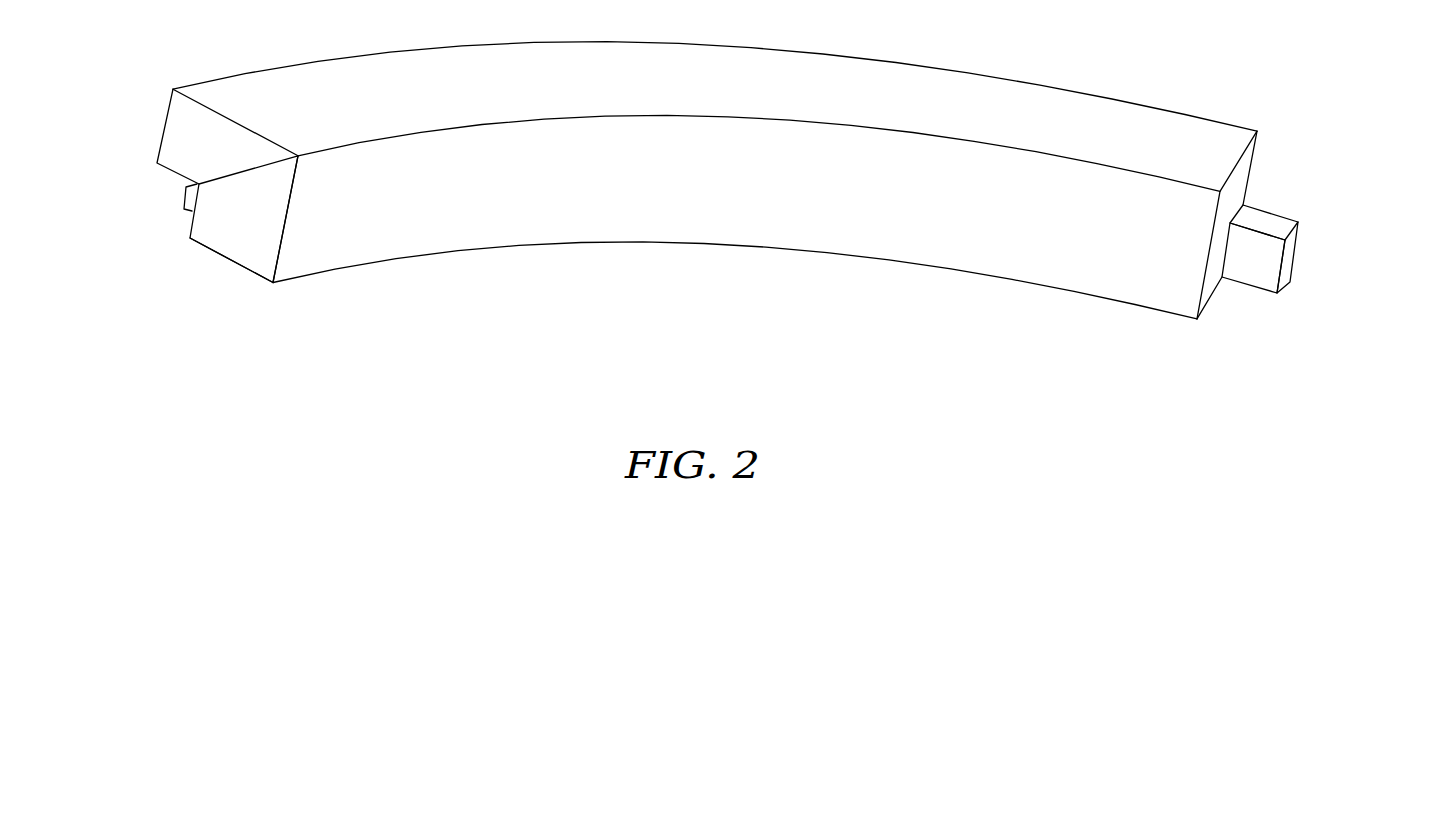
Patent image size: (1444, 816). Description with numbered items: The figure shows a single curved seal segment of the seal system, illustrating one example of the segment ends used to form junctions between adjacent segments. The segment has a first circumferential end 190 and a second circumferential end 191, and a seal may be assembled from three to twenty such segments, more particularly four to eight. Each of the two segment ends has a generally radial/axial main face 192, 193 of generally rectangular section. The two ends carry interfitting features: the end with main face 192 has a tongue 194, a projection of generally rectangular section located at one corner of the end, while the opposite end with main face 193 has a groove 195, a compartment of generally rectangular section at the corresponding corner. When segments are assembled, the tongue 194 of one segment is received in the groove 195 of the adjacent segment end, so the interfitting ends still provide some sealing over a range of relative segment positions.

The first circumferential end 190 is at (1308, 252).
The second circumferential end 191 is at (247, 240).
The main face 192 is at (1237, 180).
The main face 193 is at (185, 129).
The tongue 194 is at (1258, 270).
The groove 195 is at (171, 231).